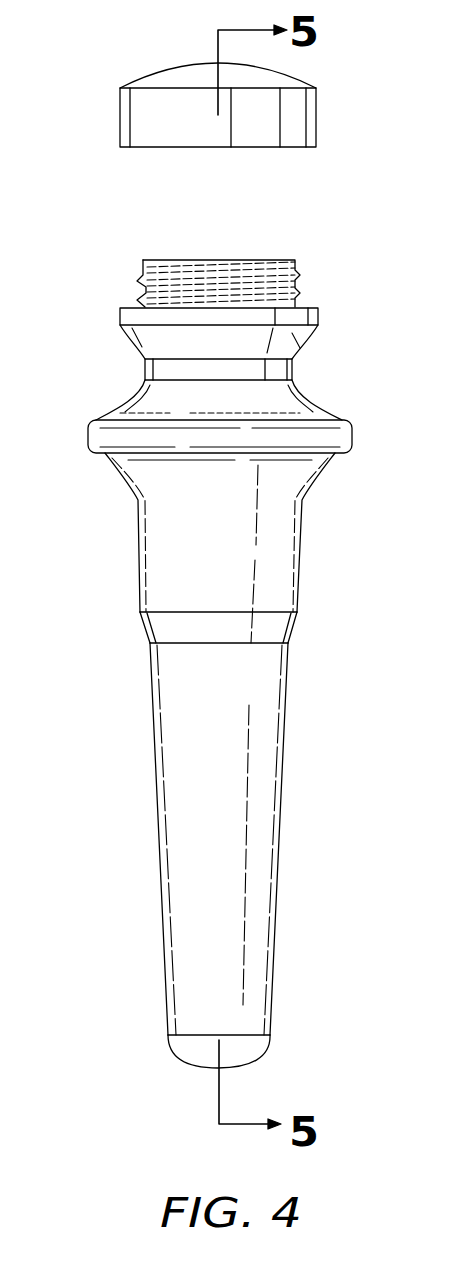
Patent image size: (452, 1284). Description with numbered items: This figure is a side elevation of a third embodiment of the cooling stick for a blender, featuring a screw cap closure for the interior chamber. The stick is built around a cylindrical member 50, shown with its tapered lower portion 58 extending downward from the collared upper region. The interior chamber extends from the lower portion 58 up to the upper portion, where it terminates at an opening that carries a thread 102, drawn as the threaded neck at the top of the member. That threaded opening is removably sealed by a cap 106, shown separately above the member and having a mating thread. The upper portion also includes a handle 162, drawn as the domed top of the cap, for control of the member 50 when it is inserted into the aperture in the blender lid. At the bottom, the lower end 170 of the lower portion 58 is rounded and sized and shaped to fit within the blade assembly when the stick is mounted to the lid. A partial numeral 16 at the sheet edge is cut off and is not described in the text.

The cap 106 is at (300, 78).
The handle 162 is at (140, 82).
The thread 102 is at (298, 270).
The cylindrical member 50 is at (250, 639).
The lower portion 58 is at (152, 702).
The lower end 170 is at (268, 1045).
The partial reference numeral 16 is at (442, 888).